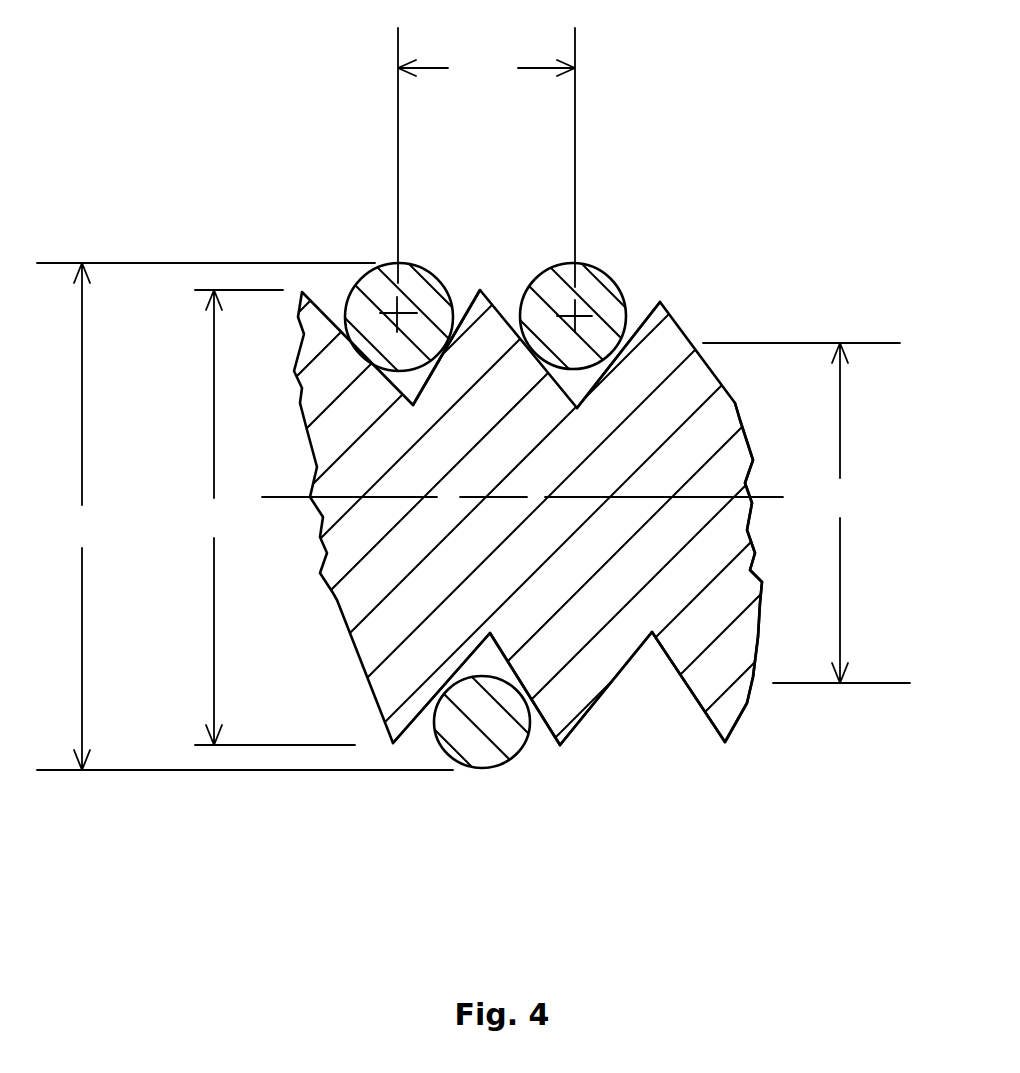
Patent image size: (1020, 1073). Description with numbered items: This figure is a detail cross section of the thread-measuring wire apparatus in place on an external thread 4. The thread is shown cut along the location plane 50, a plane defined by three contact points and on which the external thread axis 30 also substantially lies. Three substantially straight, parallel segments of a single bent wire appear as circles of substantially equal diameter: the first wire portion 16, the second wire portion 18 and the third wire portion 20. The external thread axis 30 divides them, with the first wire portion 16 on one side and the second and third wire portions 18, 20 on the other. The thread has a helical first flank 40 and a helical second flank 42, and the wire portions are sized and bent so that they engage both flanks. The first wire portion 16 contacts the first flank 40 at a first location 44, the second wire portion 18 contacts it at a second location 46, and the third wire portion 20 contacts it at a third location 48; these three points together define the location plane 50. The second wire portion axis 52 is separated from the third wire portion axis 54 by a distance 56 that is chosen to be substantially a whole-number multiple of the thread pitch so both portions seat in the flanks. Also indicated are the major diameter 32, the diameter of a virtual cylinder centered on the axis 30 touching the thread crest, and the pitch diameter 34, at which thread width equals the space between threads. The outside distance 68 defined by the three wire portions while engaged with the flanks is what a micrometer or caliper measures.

The external thread 4 is at (757, 675).
The first wire portion 16 is at (483, 768).
The second wire portion 18 is at (575, 314).
The third wire portion 20 is at (395, 308).
The external thread axis 30 is at (651, 497).
The major diameter 32 is at (274, 517).
The pitch diameter 34 is at (806, 513).
The first flank 40 is at (696, 700).
The second flank 42 is at (594, 705).
The first location 44 is at (521, 700).
The second location 46 is at (617, 295).
The third location 48 is at (447, 295).
The location plane 50 is at (652, 370).
The second wire portion axis 52 is at (394, 310).
The third wire portion axis 54 is at (572, 314).
The distance 56 is at (486, 157).
The outside distance 68 is at (245, 516).